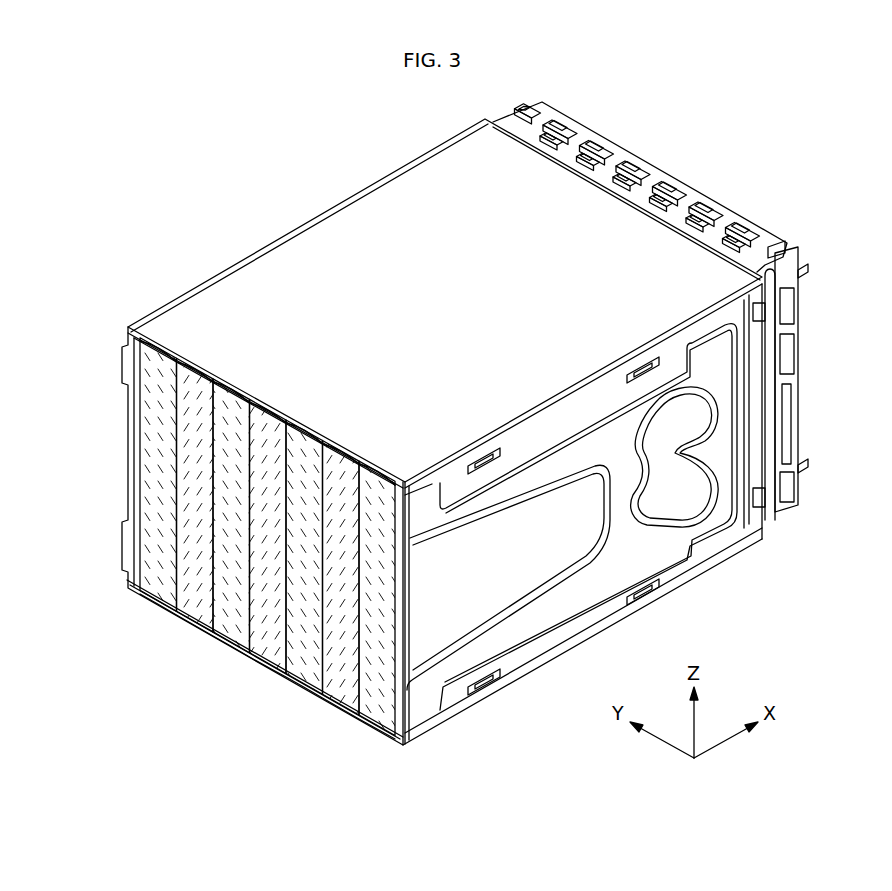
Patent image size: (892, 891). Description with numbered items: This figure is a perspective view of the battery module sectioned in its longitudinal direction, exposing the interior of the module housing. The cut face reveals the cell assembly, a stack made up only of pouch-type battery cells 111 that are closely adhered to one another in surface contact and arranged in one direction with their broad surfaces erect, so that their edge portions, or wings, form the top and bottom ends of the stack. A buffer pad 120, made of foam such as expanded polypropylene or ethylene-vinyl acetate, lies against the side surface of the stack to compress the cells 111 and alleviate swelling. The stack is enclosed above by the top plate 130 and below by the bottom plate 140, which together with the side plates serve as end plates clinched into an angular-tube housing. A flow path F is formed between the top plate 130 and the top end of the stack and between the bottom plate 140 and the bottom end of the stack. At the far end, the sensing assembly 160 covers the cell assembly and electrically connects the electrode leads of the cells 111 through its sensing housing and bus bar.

The pouch-type battery cell 111 is at (156, 460).
The buffer pad 120 is at (125, 367).
The top plate 130 is at (352, 232).
The bottom plate 140 is at (320, 705).
The sensing assembly 160 is at (665, 160).
The flow path F is at (205, 375).